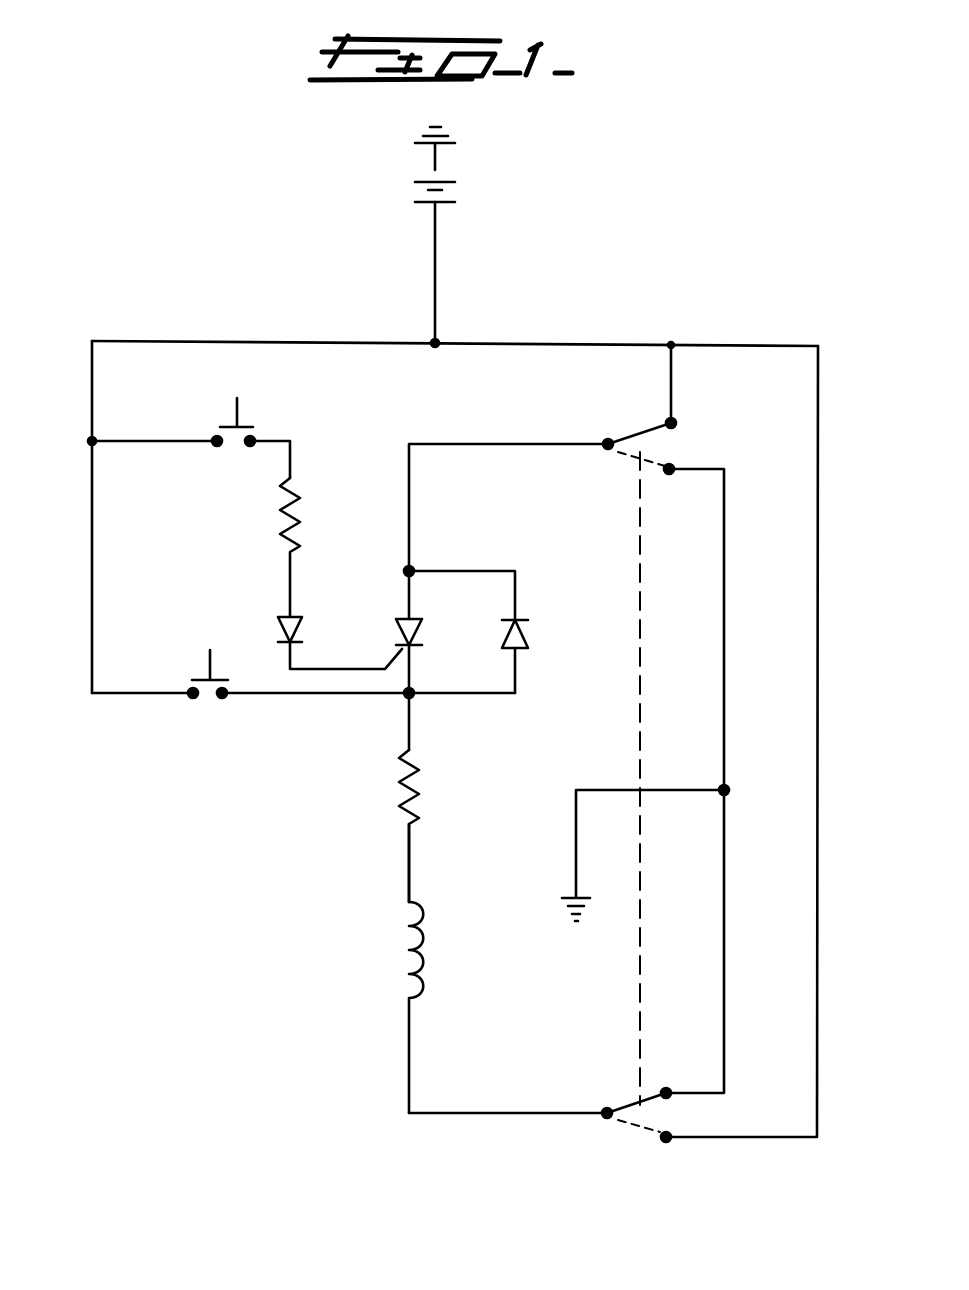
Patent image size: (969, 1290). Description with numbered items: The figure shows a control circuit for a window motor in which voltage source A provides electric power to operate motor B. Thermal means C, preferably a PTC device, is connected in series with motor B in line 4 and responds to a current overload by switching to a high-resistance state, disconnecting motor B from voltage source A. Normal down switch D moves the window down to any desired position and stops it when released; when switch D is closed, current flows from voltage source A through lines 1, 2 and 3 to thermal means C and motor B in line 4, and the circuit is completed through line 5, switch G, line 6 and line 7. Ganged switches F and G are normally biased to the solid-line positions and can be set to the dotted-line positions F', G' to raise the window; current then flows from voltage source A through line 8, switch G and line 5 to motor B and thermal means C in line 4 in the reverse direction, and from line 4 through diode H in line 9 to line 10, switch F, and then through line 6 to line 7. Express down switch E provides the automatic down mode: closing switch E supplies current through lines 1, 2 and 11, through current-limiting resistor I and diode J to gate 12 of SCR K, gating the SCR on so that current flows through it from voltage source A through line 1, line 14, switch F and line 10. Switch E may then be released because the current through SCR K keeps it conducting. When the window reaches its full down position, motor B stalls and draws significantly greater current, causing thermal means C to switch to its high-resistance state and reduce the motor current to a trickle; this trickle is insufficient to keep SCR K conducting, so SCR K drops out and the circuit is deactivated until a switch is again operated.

The line 1 is at (279, 342).
The line 2 is at (92, 404).
The line 3 is at (165, 695).
The line 4 is at (409, 858).
The line 5 is at (540, 1113).
The line 6 is at (724, 884).
The line 7 is at (680, 790).
The line 8 is at (818, 660).
The line 9 is at (436, 571).
The line 10 is at (409, 490).
The line 11 is at (172, 441).
The gate 12 is at (392, 667).
The line 14 is at (671, 384).
The voltage source A is at (466, 163).
The motor B is at (402, 958).
The thermal means C is at (404, 793).
The normal down switch D is at (198, 670).
The express down switch E is at (248, 429).
The ganged switch F is at (636, 412).
The primed position of switch F F' is at (596, 489).
The ganged switch G is at (621, 1097).
The primed position of switch G G' is at (614, 1154).
The diode H is at (531, 629).
The current-limiting resistor I is at (284, 500).
The diode J is at (276, 632).
The SCR K is at (421, 630).